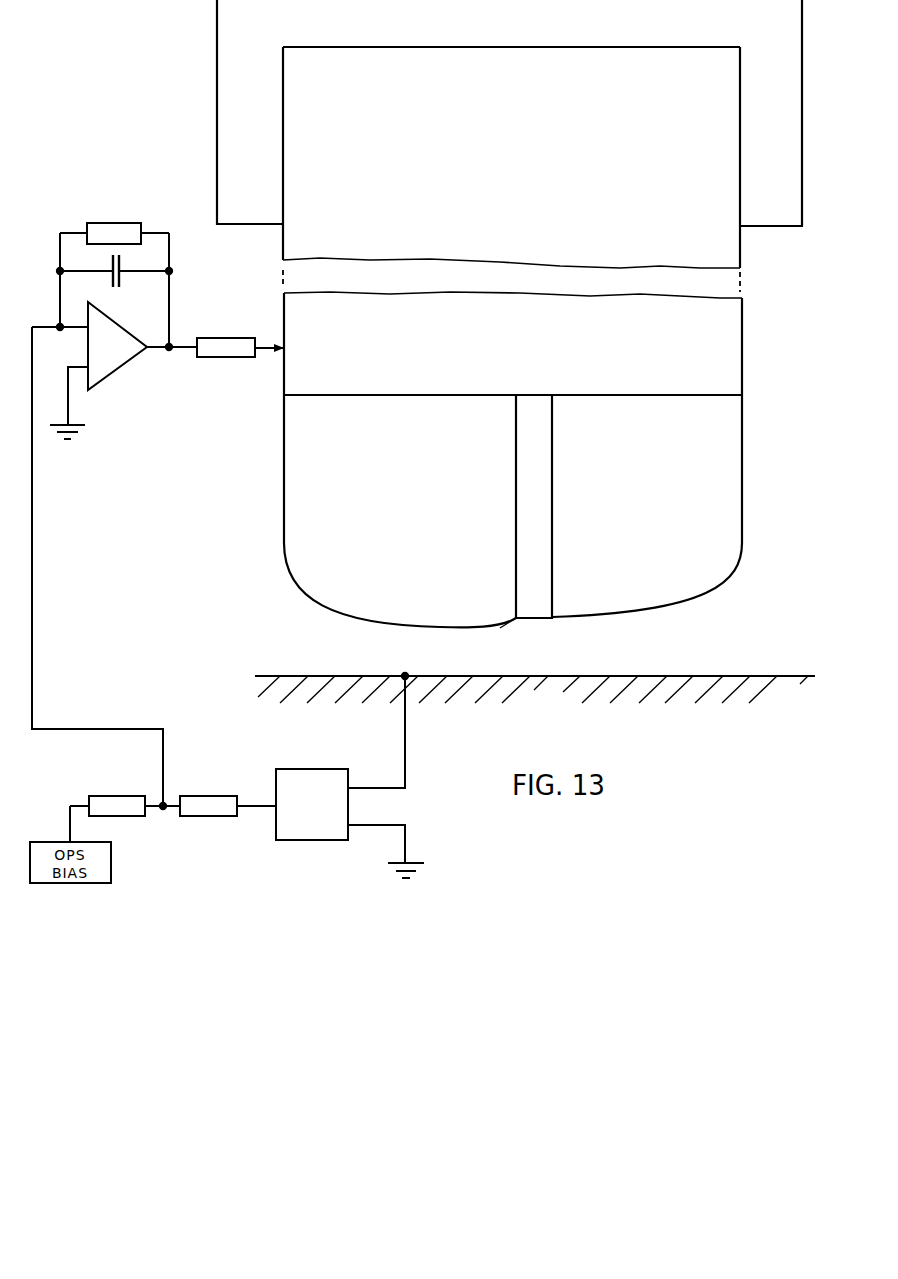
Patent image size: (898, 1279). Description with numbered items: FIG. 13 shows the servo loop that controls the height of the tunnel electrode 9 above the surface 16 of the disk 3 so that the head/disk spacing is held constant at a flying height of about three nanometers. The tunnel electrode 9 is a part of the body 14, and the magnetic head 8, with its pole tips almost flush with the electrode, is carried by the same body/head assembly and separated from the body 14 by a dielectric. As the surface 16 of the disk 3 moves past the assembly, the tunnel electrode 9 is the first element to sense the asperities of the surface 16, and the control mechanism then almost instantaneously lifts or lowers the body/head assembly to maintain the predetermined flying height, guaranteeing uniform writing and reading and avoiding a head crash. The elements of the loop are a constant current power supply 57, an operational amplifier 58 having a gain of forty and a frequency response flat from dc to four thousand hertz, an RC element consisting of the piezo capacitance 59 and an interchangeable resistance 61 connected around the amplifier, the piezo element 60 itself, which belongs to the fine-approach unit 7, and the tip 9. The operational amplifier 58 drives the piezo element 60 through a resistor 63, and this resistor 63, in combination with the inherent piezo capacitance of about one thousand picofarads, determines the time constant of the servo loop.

The disk 3 is at (563, 716).
The fine-approach unit 7 is at (763, 218).
The magnetic head 8 is at (545, 612).
The tunnel electrode 9 is at (503, 631).
The body 14 is at (428, 542).
The surface of disk 16 is at (704, 672).
The constant current power supply 57 is at (301, 835).
The operational amplifier 58 is at (117, 360).
The piezo capacitance 59 is at (122, 278).
The piezo element 60 is at (673, 227).
The interchangeable resistance 61 is at (130, 237).
The resistor 63 is at (222, 342).